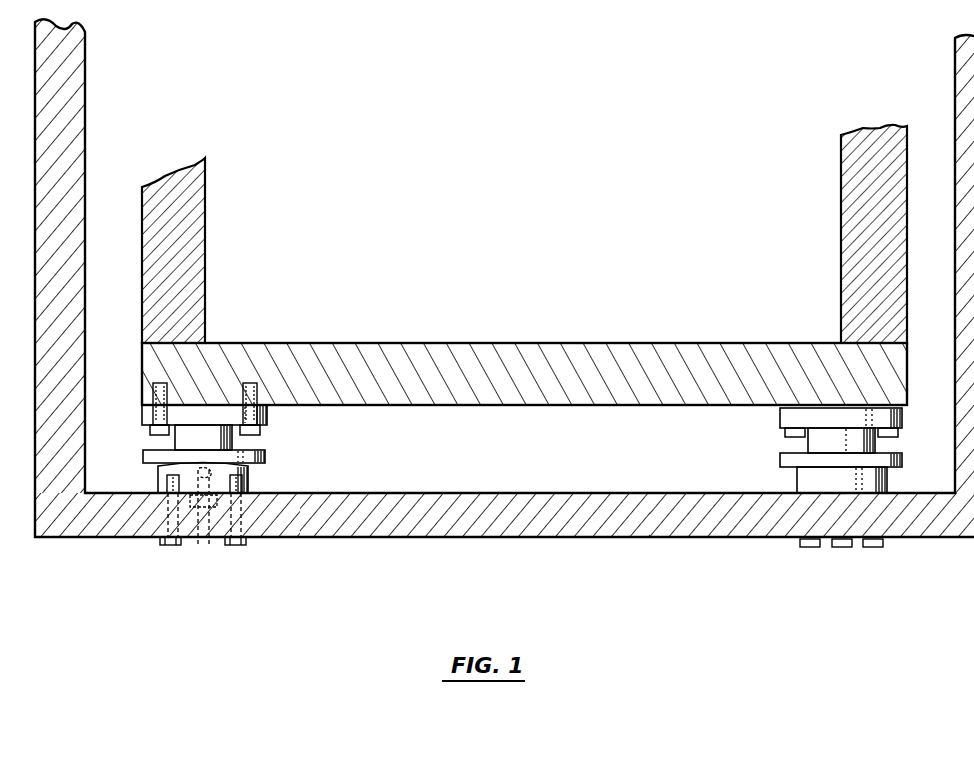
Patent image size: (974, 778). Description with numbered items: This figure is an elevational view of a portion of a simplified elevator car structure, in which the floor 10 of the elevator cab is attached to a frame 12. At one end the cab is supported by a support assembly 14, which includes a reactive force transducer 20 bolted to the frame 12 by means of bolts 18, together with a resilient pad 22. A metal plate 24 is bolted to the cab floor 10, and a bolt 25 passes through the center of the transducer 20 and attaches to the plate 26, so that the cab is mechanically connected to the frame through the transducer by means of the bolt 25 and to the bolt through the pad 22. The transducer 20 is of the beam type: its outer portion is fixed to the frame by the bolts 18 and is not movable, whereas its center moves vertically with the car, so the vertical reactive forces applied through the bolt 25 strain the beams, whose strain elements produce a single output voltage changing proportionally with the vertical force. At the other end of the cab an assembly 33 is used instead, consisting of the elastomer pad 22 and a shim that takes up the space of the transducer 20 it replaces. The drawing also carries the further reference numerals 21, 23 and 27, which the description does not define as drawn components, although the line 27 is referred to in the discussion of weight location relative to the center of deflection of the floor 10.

The floor 10 is at (468, 342).
The frame 12 is at (467, 541).
The support assembly 14 is at (274, 447).
The bolts 18 is at (172, 543).
The reactive force transducer 20 is at (252, 475).
The lower mounting block 21 is at (187, 477).
The resilient pad 22 is at (231, 440).
The screws 23 is at (167, 483).
The metal plate 24 is at (152, 413).
The bolt 25 is at (204, 543).
The plate 26 is at (155, 452).
The line 27 is at (887, 482).
The assembly 33 is at (767, 455).